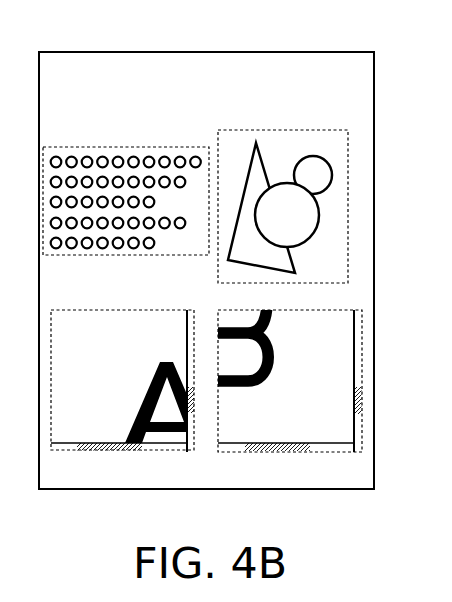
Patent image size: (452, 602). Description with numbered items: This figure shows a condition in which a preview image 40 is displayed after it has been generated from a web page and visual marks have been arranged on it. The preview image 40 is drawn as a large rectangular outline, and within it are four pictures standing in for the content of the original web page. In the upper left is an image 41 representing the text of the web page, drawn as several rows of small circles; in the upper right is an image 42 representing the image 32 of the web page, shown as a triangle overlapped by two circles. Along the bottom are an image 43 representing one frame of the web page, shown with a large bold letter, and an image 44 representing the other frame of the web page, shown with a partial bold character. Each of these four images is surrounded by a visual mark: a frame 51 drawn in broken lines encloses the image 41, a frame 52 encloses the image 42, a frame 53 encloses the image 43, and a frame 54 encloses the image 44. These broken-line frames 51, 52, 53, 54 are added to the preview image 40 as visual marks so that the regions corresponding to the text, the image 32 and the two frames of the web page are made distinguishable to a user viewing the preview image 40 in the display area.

The preview image 40 is at (298, 52).
The image 32 is at (205, 319).
The image representing the text 41 is at (35, 157).
The image representing the image 42 is at (317, 230).
The image representing the frame 43 is at (168, 444).
The image representing the frame 44 is at (337, 444).
The frame 51 is at (118, 148).
The frame 52 is at (286, 131).
The frame 53 is at (117, 309).
The frame 54 is at (285, 311).